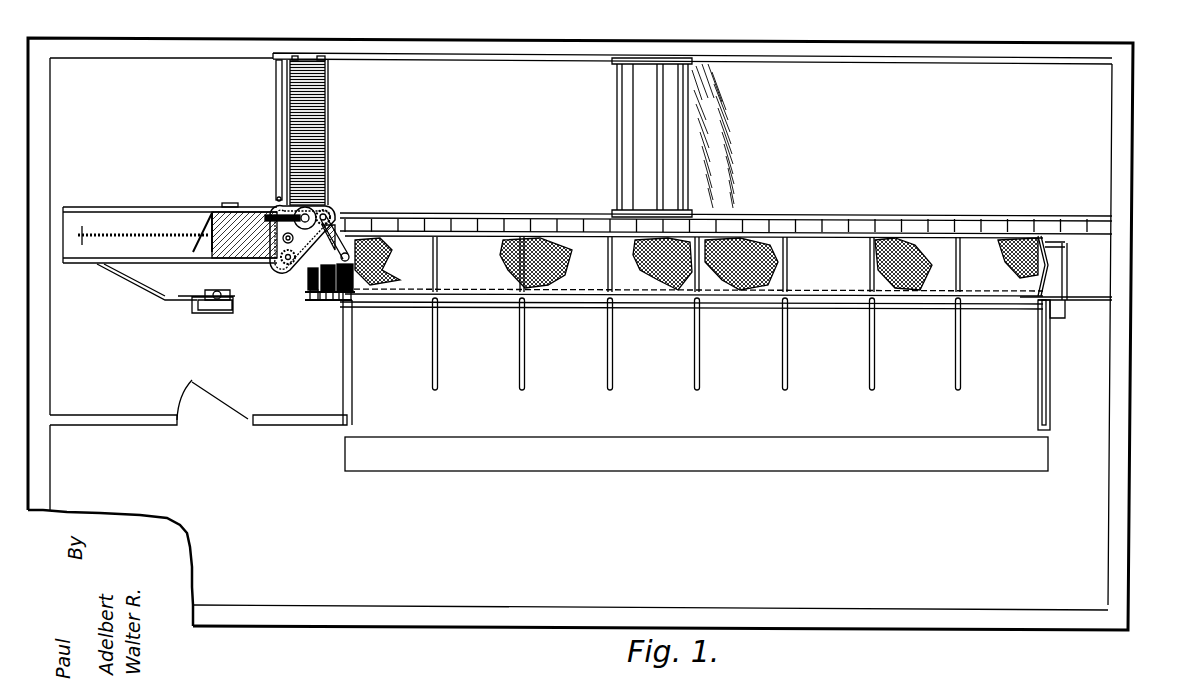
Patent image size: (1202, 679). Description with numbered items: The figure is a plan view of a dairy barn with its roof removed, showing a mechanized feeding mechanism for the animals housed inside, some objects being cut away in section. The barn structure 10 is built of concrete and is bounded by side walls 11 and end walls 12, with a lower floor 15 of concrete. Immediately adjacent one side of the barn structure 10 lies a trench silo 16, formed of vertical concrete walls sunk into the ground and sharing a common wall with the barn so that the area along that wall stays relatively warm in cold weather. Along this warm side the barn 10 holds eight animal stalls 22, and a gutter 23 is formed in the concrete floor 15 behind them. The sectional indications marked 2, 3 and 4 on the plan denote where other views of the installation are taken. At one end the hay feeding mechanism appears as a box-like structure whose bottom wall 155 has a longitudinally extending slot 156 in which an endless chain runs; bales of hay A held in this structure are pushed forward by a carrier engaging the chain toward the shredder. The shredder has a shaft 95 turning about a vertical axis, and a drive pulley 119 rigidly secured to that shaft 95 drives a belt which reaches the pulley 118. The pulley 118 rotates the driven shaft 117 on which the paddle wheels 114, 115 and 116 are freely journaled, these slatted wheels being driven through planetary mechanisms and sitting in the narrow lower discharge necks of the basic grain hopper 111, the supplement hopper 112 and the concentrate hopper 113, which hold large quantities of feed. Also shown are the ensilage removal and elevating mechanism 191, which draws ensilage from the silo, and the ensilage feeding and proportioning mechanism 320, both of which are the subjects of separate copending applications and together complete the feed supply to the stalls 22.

The barn structure 10 is at (277, 197).
The side walls 11 is at (465, 635).
The end walls 12 is at (40, 365).
The lower floor 15 is at (1093, 568).
The trench silo 16 is at (1097, 134).
The section line 2 is at (270, 52).
The section line 3 is at (233, 272).
The section line 4 is at (1053, 213).
The animal stalls 22 is at (417, 385).
The gutter 23 is at (538, 468).
The shaft 95 is at (335, 210).
The basic grain hopper 111 is at (340, 300).
The supplement hopper 112 is at (328, 297).
The concentrate hopper 113 is at (317, 300).
The paddle wheel 114 is at (350, 298).
The paddle wheel 115 is at (312, 290).
The paddle wheel 116 is at (312, 268).
The driven shaft 117 is at (356, 272).
The pulley 118 is at (350, 222).
The drive pulley 119 is at (328, 207).
The bottom wall 155 is at (172, 227).
The slot 156 is at (123, 230).
The ensilage removal and elevating mechanism 191 is at (612, 163).
The ensilage feeding and proportioning mechanism 320 is at (268, 117).
The bales of hay A is at (248, 255).